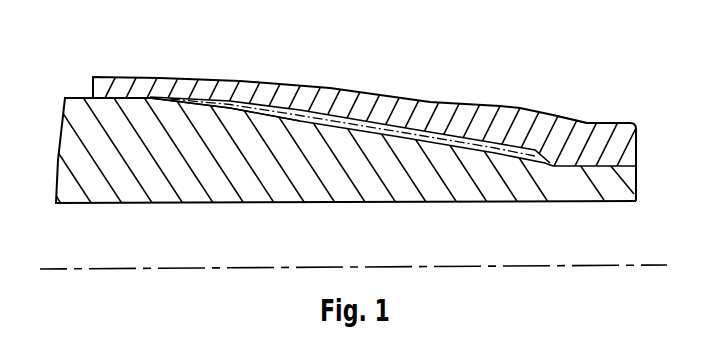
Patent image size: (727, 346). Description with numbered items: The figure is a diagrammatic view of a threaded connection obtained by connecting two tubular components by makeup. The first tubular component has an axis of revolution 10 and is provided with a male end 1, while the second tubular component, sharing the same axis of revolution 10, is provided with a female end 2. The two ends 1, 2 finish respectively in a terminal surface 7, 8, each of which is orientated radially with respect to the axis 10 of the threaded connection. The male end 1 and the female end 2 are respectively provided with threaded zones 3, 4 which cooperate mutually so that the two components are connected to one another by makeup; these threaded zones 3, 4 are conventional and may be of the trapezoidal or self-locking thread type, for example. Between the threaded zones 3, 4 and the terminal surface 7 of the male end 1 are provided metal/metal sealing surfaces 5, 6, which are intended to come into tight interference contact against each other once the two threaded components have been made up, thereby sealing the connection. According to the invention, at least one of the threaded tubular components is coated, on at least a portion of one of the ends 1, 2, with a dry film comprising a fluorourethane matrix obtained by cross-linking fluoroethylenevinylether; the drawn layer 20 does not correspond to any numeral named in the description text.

The male end 1 is at (130, 163).
The female end 2 is at (103, 87).
The threaded zone 3 is at (228, 108).
The threaded zone 4 is at (273, 84).
The metal/metal sealing surface 5 is at (573, 165).
The metal/metal sealing surface 6 is at (607, 122).
The terminal surface 7 is at (638, 189).
The terminal surface 8 is at (93, 80).
The axis of revolution 10 is at (622, 265).
The intermediate layer 20 is at (412, 136).